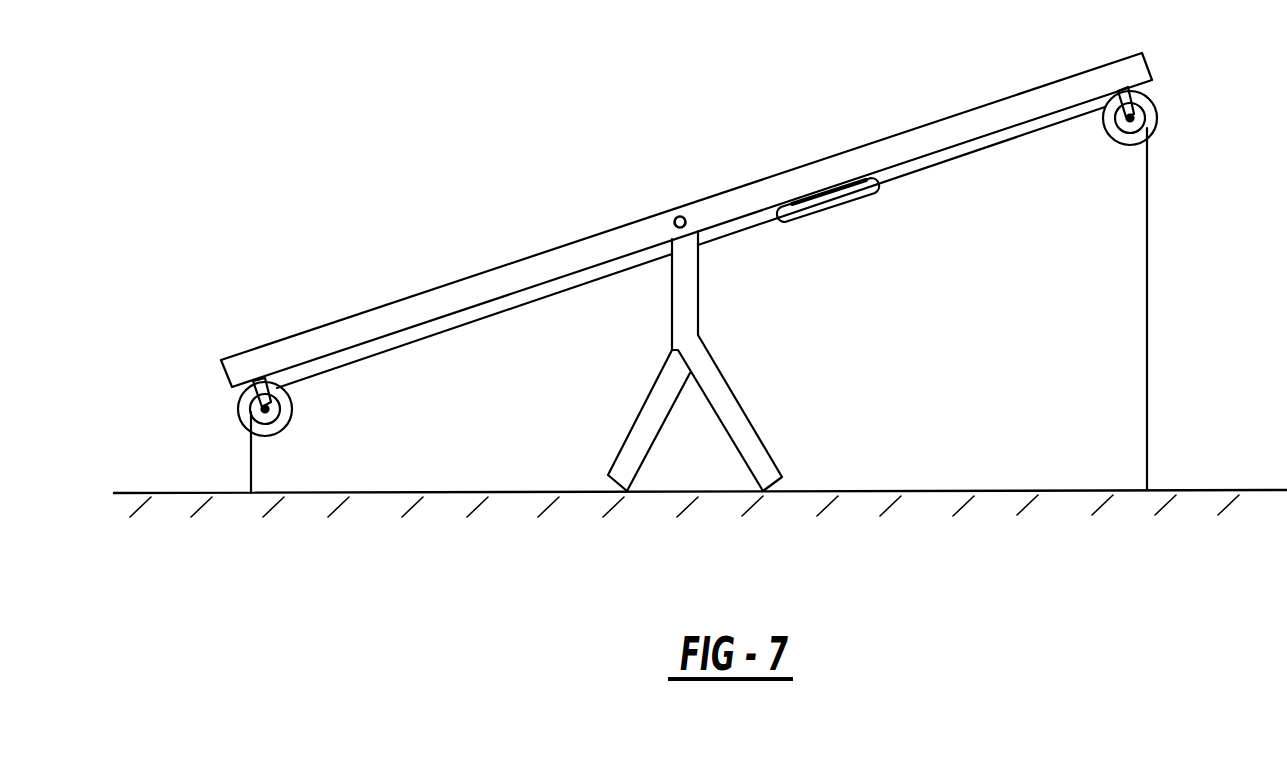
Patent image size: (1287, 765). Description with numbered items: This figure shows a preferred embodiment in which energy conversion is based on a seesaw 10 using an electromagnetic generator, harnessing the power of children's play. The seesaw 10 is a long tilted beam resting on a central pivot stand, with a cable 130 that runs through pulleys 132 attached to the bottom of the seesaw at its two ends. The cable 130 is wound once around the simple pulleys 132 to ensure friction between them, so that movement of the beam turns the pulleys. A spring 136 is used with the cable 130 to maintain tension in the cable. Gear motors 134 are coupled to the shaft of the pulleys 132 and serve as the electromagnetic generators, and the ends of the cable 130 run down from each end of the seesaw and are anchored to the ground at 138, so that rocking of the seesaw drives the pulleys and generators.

The seesaw 10 is at (680, 160).
The cable 130 is at (543, 300).
The pulleys 132 is at (273, 427).
The gear motors 134 is at (238, 416).
The spring 136 is at (848, 203).
The ground anchor 138 is at (251, 493).